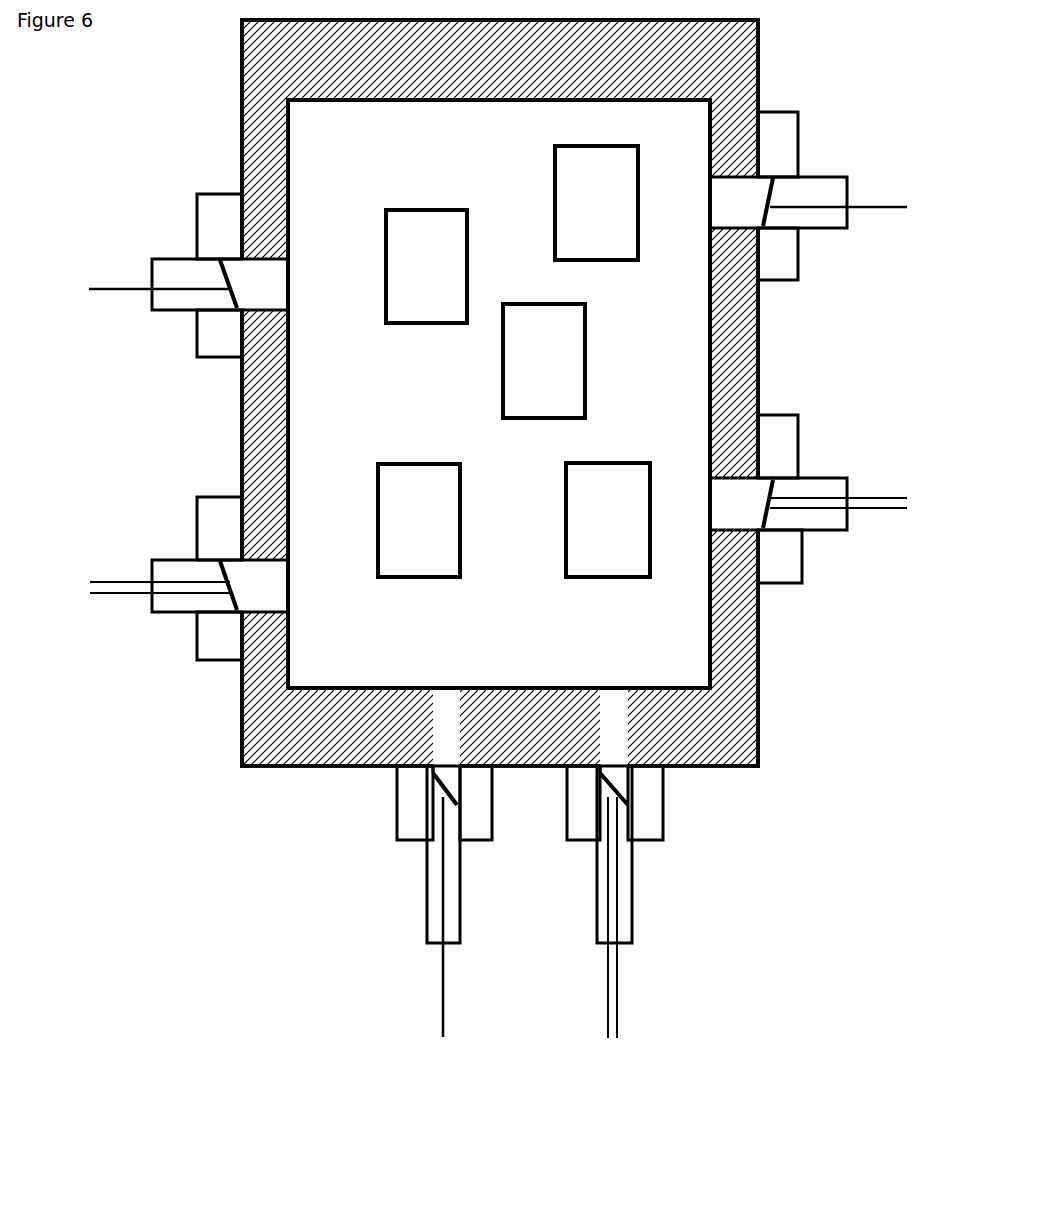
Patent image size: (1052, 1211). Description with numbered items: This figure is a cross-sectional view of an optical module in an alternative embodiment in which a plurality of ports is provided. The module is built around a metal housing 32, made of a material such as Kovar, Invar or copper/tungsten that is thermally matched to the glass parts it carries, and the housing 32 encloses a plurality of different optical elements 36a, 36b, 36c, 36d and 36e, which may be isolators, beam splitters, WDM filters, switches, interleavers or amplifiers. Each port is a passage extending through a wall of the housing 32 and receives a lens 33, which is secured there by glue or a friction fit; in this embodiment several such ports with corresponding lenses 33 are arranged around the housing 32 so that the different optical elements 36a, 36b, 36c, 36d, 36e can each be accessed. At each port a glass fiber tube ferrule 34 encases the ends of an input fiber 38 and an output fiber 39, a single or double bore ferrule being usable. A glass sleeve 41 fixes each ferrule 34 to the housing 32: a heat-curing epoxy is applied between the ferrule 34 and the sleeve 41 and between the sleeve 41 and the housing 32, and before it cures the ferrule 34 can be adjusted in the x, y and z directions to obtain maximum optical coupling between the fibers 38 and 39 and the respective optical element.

The housing 32 is at (722, 733).
The lens 33 is at (278, 290).
The fiber tube ferrule 34 is at (172, 562).
The optical element 36a is at (426, 266).
The optical element 36b is at (596, 203).
The optical element 36c is at (544, 361).
The optical element 36d is at (419, 520).
The optical element 36e is at (608, 520).
The input fiber 38 is at (135, 578).
The output fiber 39 is at (108, 596).
The glass sleeve 41 is at (217, 513).